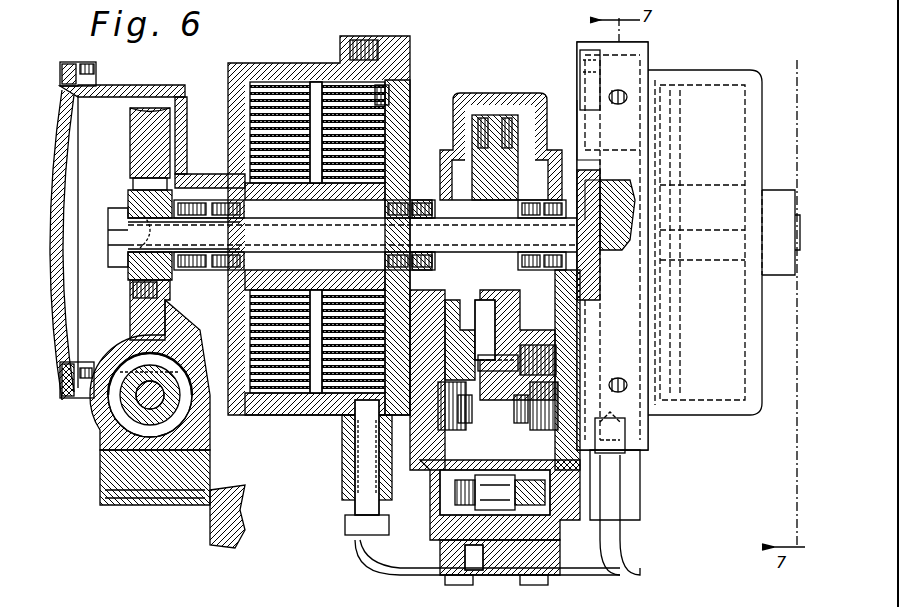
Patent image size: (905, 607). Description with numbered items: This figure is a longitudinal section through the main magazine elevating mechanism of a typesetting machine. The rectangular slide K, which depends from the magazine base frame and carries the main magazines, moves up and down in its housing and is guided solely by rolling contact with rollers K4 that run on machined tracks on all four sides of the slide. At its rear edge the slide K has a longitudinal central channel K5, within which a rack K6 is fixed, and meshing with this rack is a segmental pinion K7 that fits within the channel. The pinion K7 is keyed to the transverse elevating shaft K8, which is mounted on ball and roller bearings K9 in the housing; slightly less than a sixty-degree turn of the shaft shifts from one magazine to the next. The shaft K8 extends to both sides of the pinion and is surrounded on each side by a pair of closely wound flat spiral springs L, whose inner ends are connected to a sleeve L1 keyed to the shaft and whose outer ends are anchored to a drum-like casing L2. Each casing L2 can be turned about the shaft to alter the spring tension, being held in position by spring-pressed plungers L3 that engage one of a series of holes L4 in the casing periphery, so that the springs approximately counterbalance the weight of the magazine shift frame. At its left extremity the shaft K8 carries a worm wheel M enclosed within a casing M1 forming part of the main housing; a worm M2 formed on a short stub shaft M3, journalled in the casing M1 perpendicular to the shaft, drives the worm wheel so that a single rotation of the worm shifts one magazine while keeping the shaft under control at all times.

The casing M1 is at (118, 88).
The worm wheel M is at (133, 156).
The worm M2 is at (130, 418).
The stub shaft M3 is at (126, 400).
The elevating shaft K8 is at (354, 237).
The ball and roller bearings K9 is at (205, 198).
The casing L2 is at (268, 78).
The spiral springs L is at (282, 78).
The sleeve L1 is at (630, 190).
The holes L4 is at (627, 95).
The segmental pinion K7 is at (528, 108).
The slide K is at (460, 460).
The rollers K4 is at (472, 405).
The channel K5 is at (548, 380).
The rack K6 is at (525, 350).
The spring-pressed plungers L3 is at (346, 446).